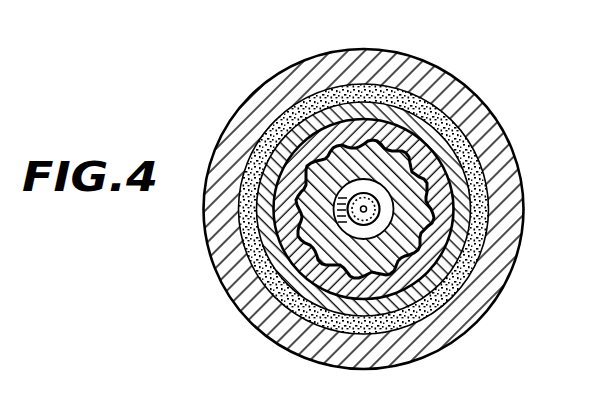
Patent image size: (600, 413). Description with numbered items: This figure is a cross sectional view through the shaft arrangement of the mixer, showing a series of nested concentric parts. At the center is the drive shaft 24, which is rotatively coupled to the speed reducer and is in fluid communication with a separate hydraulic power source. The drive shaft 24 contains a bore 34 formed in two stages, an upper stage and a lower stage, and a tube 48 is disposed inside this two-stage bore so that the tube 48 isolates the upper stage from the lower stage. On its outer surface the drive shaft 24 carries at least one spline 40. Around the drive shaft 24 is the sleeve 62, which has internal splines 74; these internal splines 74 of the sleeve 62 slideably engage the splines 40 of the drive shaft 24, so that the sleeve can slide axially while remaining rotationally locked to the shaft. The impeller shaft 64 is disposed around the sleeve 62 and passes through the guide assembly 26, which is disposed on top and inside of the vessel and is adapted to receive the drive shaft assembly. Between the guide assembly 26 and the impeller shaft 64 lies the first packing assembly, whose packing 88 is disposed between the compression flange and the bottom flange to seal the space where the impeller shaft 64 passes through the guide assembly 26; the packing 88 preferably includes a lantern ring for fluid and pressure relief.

The drive shaft 24 is at (453, 323).
The guide assembly 26 is at (480, 101).
The packing 88 is at (470, 148).
The internal splines 74 is at (270, 272).
The sleeve 62 is at (445, 258).
The impeller shaft 64 is at (457, 212).
The bore 34 is at (308, 135).
The spline 40 is at (300, 213).
The tube 48 is at (374, 195).